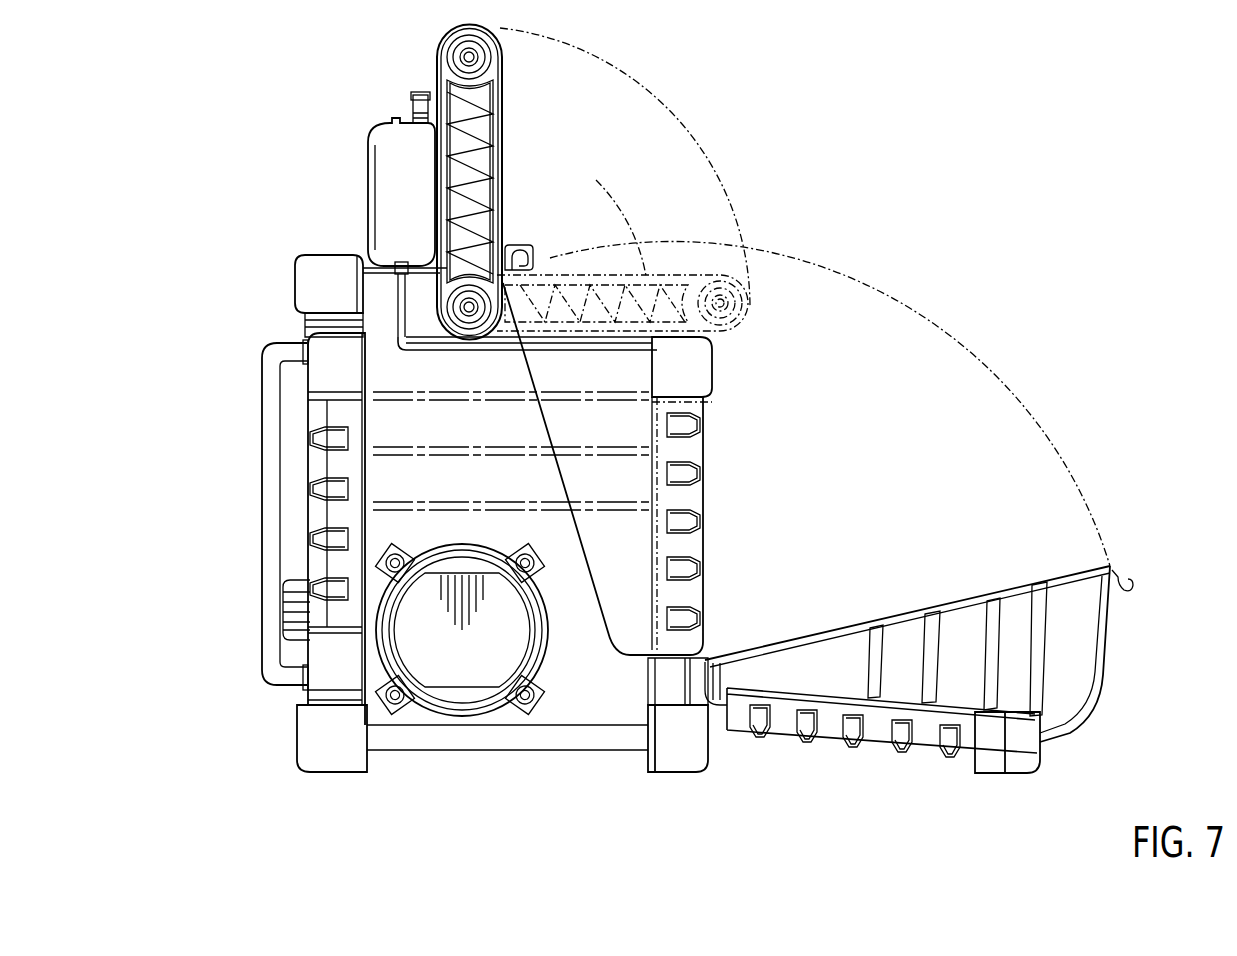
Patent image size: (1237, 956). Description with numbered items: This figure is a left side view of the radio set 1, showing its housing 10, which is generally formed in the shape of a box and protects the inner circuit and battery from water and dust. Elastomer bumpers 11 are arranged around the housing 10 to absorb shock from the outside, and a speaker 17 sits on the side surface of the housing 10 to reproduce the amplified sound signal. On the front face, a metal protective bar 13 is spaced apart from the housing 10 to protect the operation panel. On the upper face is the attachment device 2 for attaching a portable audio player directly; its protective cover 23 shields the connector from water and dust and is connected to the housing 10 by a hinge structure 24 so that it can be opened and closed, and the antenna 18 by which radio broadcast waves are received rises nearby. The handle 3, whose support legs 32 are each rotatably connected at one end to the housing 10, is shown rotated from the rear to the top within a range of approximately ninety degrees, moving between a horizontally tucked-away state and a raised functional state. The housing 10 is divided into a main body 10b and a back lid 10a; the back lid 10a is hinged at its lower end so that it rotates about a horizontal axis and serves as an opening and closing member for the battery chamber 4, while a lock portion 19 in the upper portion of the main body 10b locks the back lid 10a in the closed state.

The radio set 1 is at (246, 163).
The attachment device 2 is at (353, 246).
The handle 3 is at (505, 107).
The battery chamber 4 is at (620, 477).
The housing 10 is at (294, 265).
The back lid 10a is at (808, 667).
The main body 10b is at (438, 422).
The elastomer bumpers 11 is at (695, 369).
The protective bars 13 is at (268, 467).
The speakers 17 is at (461, 663).
The antenna 18 is at (417, 107).
The lock portion 19 is at (512, 258).
The protective cover 23 is at (390, 172).
The hinge structure 24 is at (392, 273).
The support legs 32 is at (640, 273).